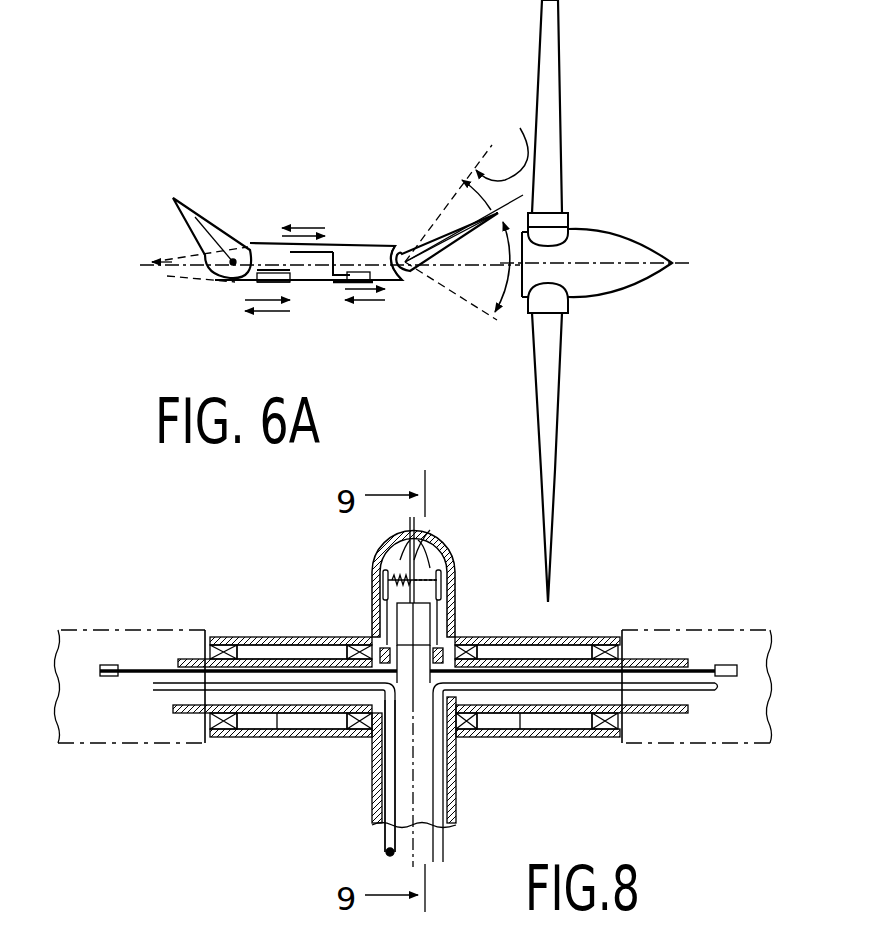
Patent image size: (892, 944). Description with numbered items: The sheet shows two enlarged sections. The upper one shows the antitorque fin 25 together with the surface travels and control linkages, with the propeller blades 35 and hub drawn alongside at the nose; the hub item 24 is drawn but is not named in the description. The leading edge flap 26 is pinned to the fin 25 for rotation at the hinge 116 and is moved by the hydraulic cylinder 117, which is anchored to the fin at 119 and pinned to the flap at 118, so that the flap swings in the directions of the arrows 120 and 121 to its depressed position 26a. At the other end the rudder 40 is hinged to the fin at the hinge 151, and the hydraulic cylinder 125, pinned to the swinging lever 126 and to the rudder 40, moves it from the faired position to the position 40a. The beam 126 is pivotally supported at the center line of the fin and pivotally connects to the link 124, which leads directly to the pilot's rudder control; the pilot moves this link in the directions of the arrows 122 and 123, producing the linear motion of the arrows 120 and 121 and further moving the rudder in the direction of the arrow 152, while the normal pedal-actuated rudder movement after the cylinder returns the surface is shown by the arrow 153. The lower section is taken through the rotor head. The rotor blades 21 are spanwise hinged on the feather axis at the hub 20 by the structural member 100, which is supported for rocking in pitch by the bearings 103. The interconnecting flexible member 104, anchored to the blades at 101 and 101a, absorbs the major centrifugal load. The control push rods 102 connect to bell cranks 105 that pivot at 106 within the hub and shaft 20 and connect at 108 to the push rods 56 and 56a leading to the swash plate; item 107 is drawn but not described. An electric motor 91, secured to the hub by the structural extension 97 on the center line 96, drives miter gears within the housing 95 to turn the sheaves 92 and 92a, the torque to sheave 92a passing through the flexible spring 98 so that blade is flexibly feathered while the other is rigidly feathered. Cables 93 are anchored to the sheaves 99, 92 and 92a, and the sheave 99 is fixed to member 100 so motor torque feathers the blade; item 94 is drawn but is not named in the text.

In FIG. 6A, the depressed position of leading edge flap 26a is at (200, 252).
In FIG. 6A, the leading edge flap 26 is at (152, 270).
In FIG. 6A, the pin connection of cylinder to flap 118 is at (218, 280).
In FIG. 6A, the fin 25 is at (252, 282).
In FIG. 6A, the hinge 116 is at (252, 252).
In FIG. 6A, the hydraulic cylinder 117 is at (275, 273).
In FIG. 6A, the arrow 122 is at (296, 228).
In FIG. 6A, the arrow 123 is at (332, 252).
In FIG. 6A, the link 124 is at (350, 272).
In FIG. 6A, the hydraulic cylinder 125 is at (365, 272).
In FIG. 6A, the arrow 121 is at (248, 311).
In FIG. 6A, the arrow 120 is at (286, 302).
In FIG. 6A, the anchor point of cylinder 119 is at (287, 283).
In FIG. 6A, the swinging lever (beam) 126 is at (358, 283).
In FIG. 6A, the hinge 151 is at (425, 288).
In FIG. 6A, the rudder 40 is at (445, 276).
In FIG. 6A, the depressed position of rudder 40a is at (468, 190).
In FIG. 6A, the arrow 152 is at (502, 148).
In FIG. 6A, the arrow 153 is at (500, 312).
In FIG. 6A, the propeller blades 35 is at (562, 158).
In FIG. 6A, the hub nacelle 24 is at (600, 238).
In FIG. 8, the rotor blades 21 is at (96, 745).
In FIG. 8, the sheave 99 is at (482, 640).
In FIG. 8, the hub 20 is at (456, 560).
In FIG. 8, the structural extension (member) 97 is at (410, 540).
In FIG. 8, the housing 95 is at (416, 560).
In FIG. 8, the center line 96 is at (400, 560).
In FIG. 8, the wire 94 is at (430, 568).
In FIG. 8, the electric motor 91 is at (420, 626).
In FIG. 8, the flexible spring 98 is at (384, 582).
In FIG. 8, the sheave 92 is at (443, 580).
In FIG. 8, the sheave 92a is at (384, 595).
In FIG. 8, the cables 93 is at (445, 648).
In FIG. 8, the structural member 100 is at (262, 737).
In FIG. 8, the bearings 103 is at (222, 737).
In FIG. 8, the interconnecting flexible member 104 is at (182, 658).
In FIG. 8, the anchor point of flexible member 101a is at (118, 666).
In FIG. 8, the anchor point of flexible member 101 is at (735, 665).
In FIG. 8, the control push rods 102 is at (166, 692).
In FIG. 8, the drive rod 107 is at (298, 737).
In FIG. 8, the bellcrank connection point 108 is at (396, 700).
In FIG. 8, the bell cranks 105 is at (392, 722).
In FIG. 8, the pivot 106 is at (388, 742).
In FIG. 8, the push rod 56 is at (456, 832).
In FIG. 8, the push rod 56a is at (384, 850).